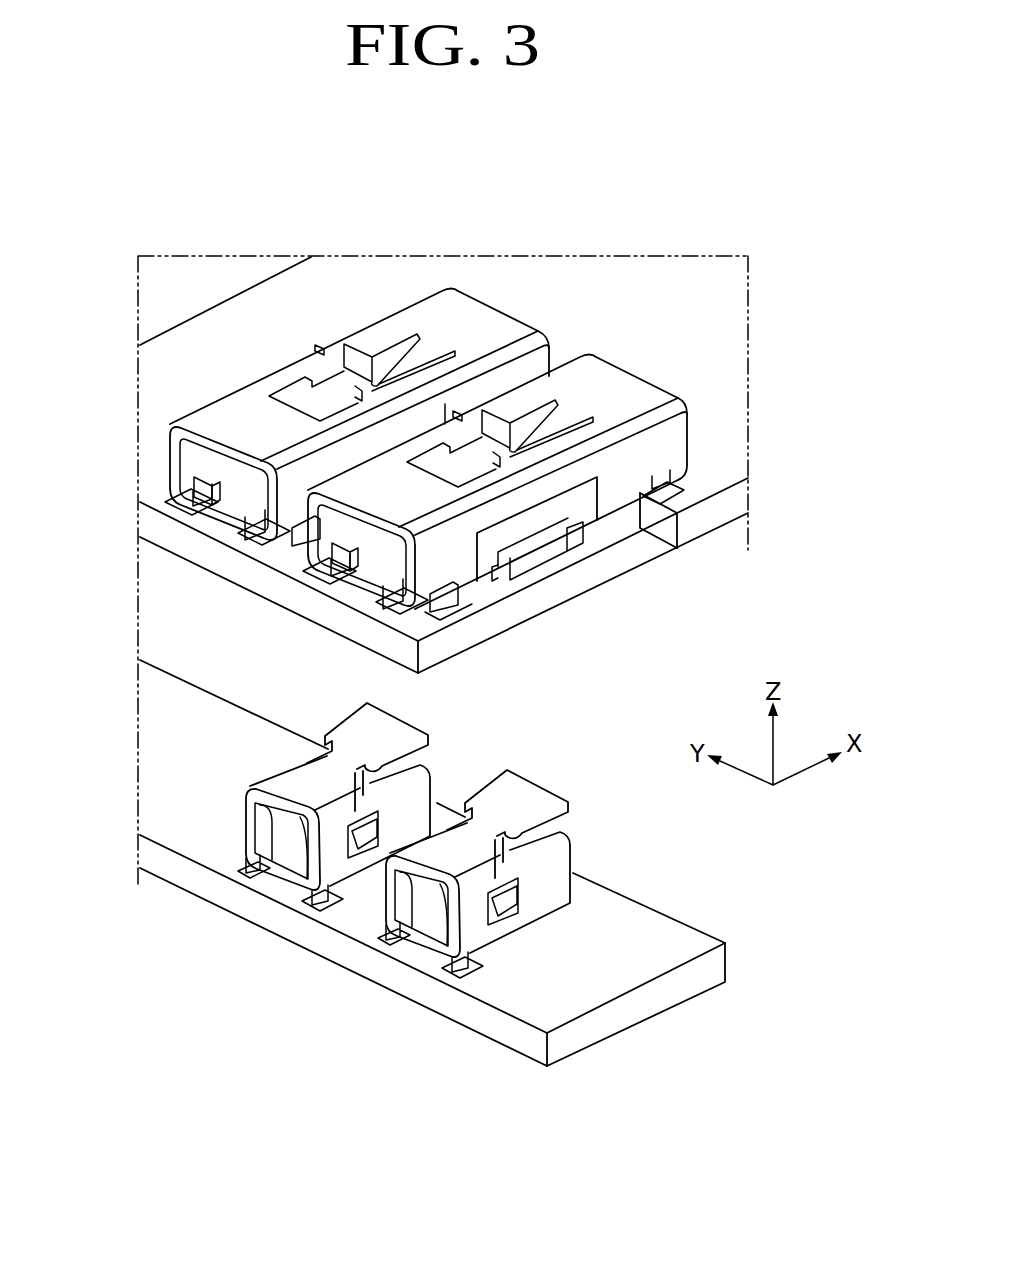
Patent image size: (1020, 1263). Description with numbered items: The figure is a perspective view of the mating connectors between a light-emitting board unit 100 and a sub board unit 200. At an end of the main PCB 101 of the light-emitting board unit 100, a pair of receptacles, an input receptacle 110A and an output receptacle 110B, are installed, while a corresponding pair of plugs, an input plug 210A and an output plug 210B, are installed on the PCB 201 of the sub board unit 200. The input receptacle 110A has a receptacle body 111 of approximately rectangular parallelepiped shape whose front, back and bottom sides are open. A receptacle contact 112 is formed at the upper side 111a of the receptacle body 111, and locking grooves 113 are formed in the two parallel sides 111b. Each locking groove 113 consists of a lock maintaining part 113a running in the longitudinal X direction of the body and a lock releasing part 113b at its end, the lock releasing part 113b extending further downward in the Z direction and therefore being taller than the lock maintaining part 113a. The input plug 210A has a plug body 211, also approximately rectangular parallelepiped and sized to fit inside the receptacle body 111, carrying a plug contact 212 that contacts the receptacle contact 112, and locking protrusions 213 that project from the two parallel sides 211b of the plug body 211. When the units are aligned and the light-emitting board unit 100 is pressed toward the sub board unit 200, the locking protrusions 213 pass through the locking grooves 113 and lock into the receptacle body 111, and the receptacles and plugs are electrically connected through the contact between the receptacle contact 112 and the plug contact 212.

The light-emitting board unit 100 is at (697, 552).
The main PCB 101 is at (178, 372).
The input receptacle 110A is at (515, 488).
The output receptacle 110B is at (196, 458).
The receptacle body 111 is at (571, 461).
The upper side of receptacle body 111a is at (612, 380).
The sides of receptacle body 111b is at (657, 457).
The receptacle contact 112 is at (313, 400).
The locking groove 113 is at (546, 576).
The lock maintaining part 113a is at (538, 540).
The lock releasing part 113b is at (531, 604).
The sub board unit 200 is at (413, 1030).
The PCB 201 is at (635, 1010).
The input plug 210A is at (470, 911).
The output plug 210B is at (276, 882).
The plug body 211 is at (532, 885).
The sides of plug body 211b is at (565, 888).
The plug contact 212 is at (392, 728).
The locking protrusion 213 is at (398, 833).